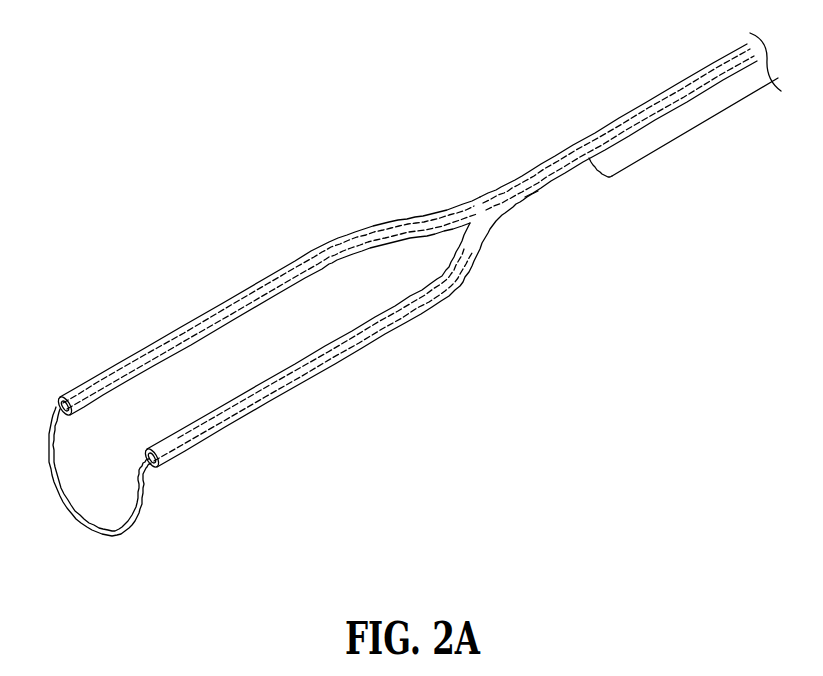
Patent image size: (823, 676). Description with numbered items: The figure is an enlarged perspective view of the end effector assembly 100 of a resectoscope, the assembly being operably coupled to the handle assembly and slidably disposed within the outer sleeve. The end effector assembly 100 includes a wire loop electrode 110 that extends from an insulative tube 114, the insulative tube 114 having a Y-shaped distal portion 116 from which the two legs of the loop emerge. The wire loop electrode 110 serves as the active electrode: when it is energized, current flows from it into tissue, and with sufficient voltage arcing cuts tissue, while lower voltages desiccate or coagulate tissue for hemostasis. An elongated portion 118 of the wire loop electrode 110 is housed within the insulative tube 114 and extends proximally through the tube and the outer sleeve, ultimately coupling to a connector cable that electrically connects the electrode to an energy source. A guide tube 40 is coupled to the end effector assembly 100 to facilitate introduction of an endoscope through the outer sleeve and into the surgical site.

The end effector assembly 100 is at (272, 194).
The wire loop electrode 110 is at (87, 526).
The insulative tube 114 is at (297, 385).
The Y-shaped distal portion 116 is at (435, 341).
The elongated portion 118 is at (640, 111).
The guide tube 40 is at (670, 128).